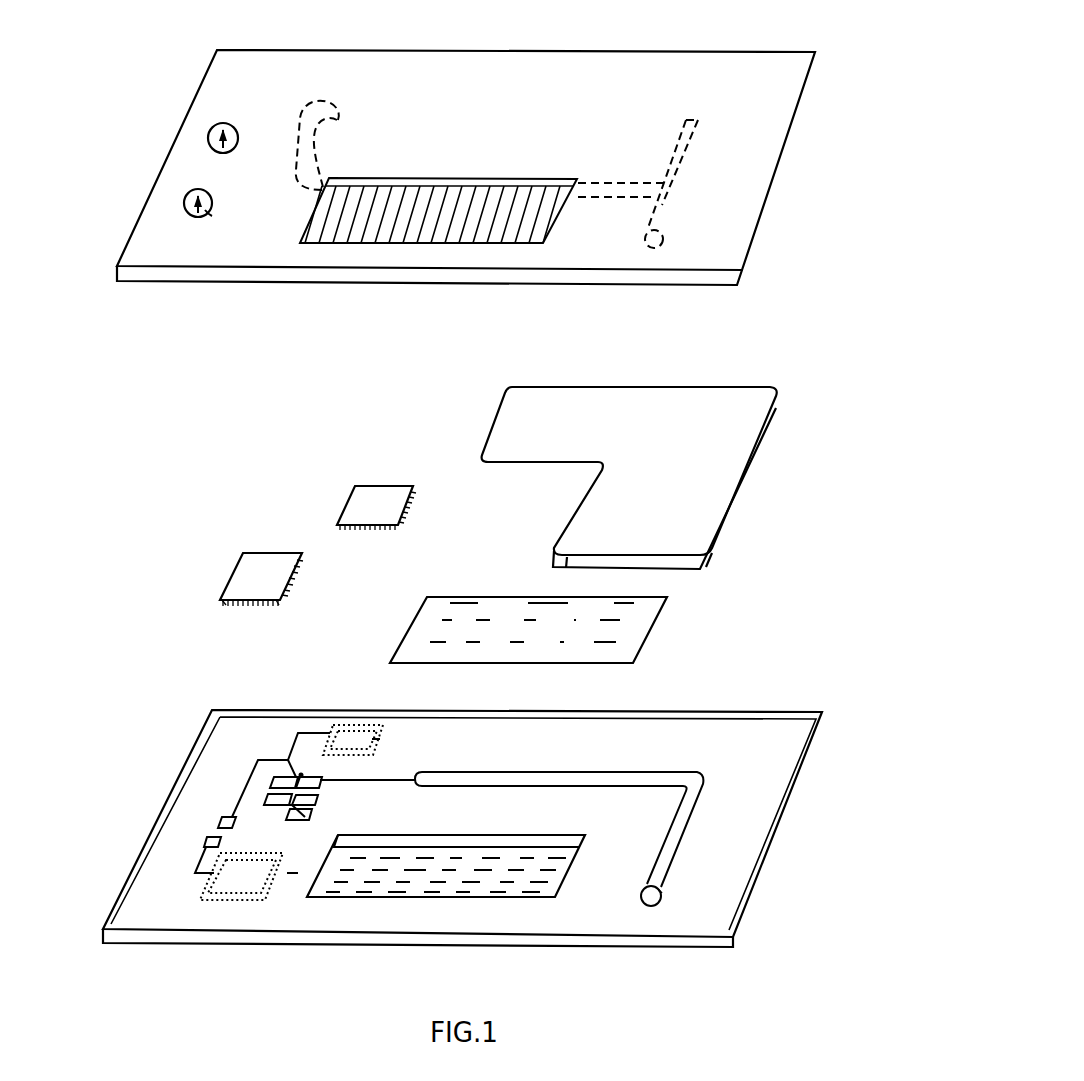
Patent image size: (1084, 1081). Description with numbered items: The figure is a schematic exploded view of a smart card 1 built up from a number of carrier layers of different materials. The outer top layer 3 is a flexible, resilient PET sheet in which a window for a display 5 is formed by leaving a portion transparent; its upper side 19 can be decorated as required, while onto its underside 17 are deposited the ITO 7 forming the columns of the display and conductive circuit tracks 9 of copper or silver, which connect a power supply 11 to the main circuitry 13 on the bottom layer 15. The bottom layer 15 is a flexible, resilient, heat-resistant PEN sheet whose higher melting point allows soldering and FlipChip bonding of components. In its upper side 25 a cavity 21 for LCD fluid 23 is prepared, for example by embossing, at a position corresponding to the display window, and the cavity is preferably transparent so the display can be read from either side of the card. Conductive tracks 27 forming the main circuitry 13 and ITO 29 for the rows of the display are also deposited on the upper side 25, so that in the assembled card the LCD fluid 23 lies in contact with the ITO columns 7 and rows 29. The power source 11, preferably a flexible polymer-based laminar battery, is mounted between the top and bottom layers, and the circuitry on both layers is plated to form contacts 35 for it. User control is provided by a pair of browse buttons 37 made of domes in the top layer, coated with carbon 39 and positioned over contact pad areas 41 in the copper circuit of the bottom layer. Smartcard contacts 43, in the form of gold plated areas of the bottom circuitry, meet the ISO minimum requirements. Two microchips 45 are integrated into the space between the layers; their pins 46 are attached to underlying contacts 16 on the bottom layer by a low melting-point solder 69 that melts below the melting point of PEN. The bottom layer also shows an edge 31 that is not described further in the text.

The smart card 1 is at (844, 236).
The top layer 3 is at (752, 50).
The display 5 is at (464, 150).
The ITO 7 is at (537, 188).
The conductive circuit tracks 9 is at (334, 127).
The power supply 11 is at (507, 402).
The main circuitry 13 is at (316, 729).
The bottom layer 15 is at (802, 815).
The contacts 16 is at (372, 746).
The underside 17 is at (750, 254).
The upper side 19 is at (778, 100).
The cavity 21 is at (400, 848).
The LCD fluid 23 is at (645, 622).
The upper side 25 is at (778, 751).
The conductive tracks 27 is at (641, 901).
The ITO 29 is at (518, 856).
The bottom plate edge 31 is at (744, 880).
The contacts 35 is at (661, 240).
The browse buttons 37 is at (222, 126).
The carbon 39 is at (210, 218).
The contact pad areas 41 is at (212, 845).
The smartcard contacts 43 is at (272, 795).
The microchips 45 is at (348, 499).
The pins 46 is at (225, 602).
The low melting-point temperature solder 69 is at (276, 602).